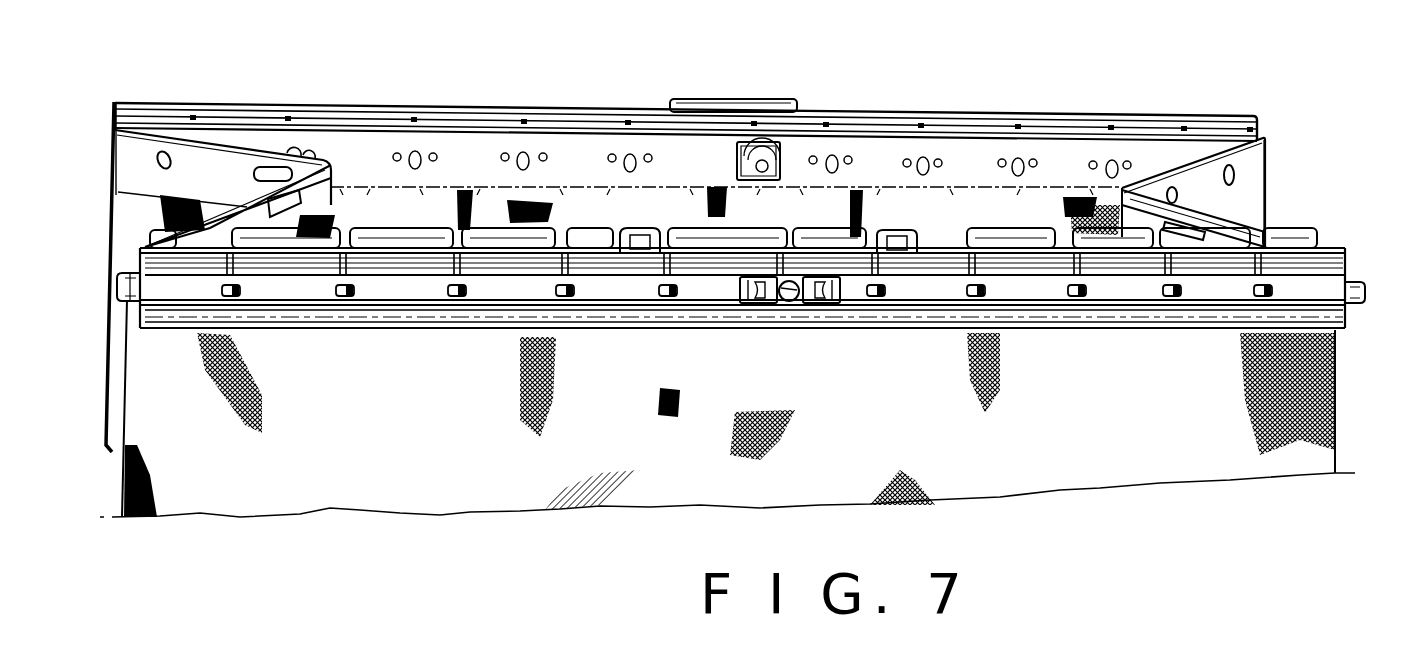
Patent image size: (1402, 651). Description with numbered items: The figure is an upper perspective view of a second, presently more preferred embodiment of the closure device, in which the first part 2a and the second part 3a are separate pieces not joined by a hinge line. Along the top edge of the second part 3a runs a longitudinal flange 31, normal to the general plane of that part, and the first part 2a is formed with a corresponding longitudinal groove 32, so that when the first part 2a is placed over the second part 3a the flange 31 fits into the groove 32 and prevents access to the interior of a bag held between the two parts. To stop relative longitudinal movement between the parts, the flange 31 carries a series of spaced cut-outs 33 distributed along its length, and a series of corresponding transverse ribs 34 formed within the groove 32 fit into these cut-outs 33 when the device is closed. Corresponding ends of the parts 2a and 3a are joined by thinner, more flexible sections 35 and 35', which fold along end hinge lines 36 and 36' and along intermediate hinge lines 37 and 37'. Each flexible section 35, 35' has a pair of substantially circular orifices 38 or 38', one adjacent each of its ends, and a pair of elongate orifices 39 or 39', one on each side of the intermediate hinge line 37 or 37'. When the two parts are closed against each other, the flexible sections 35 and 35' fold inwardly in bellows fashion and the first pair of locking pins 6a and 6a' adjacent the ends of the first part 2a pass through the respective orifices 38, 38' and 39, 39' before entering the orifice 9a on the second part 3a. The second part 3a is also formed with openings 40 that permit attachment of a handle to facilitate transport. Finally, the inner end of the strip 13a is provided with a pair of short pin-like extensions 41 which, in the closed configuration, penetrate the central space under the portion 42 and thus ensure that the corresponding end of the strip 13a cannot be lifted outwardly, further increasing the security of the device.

The first part 2a is at (465, 142).
The second part 3a is at (1330, 270).
The locking pin 6a is at (762, 116).
The locking pin 6a' is at (515, 107).
The orifice 9a is at (345, 300).
The strip 13a is at (1357, 304).
The longitudinal flange 31 is at (165, 236).
The longitudinal groove 32 is at (347, 117).
The cut-out 33 is at (662, 230).
The transverse rib 34 is at (622, 116).
The flexible section 35 is at (1229, 186).
The flexible section 35' is at (200, 174).
The end hinge line 36 is at (1291, 161).
The end hinge line 36' is at (94, 125).
The intermediate hinge line 37 is at (1145, 151).
The intermediate hinge line 37' is at (272, 149).
The circular orifice 38 is at (1220, 118).
The circular orifice 38' is at (166, 108).
The elongate orifice 39 is at (1229, 144).
The elongate orifice 39' is at (328, 130).
The opening 40 is at (637, 232).
The pin-like extension 41 is at (763, 302).
The portion 42 is at (784, 303).